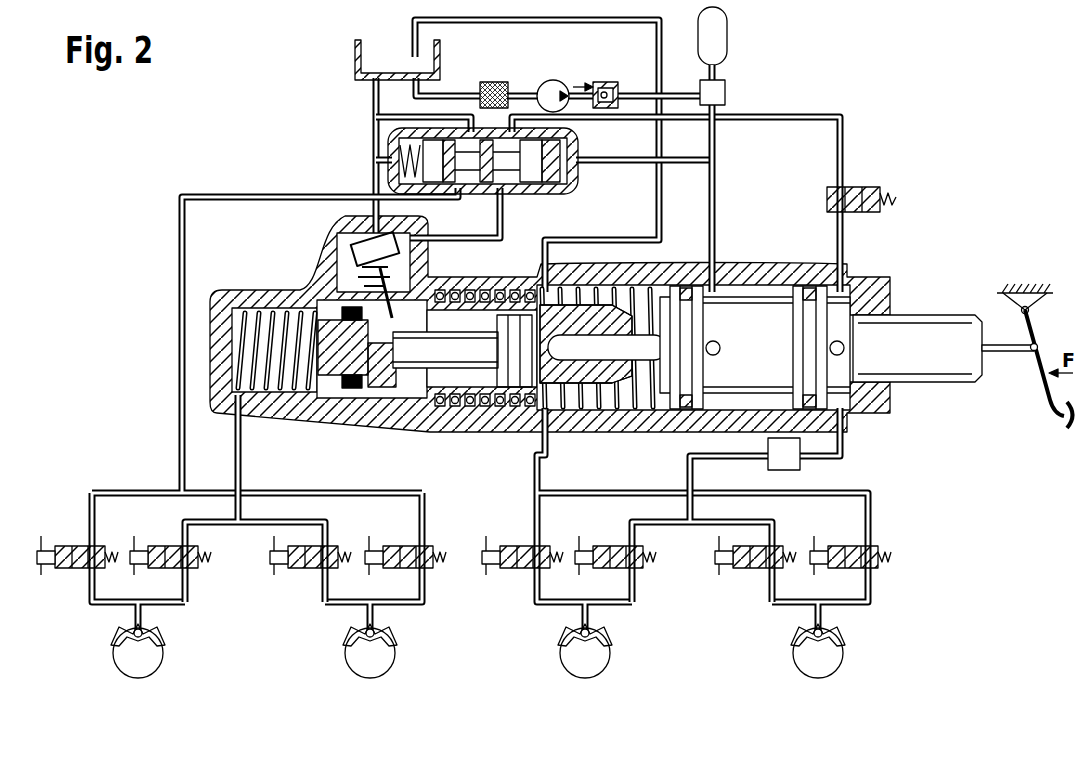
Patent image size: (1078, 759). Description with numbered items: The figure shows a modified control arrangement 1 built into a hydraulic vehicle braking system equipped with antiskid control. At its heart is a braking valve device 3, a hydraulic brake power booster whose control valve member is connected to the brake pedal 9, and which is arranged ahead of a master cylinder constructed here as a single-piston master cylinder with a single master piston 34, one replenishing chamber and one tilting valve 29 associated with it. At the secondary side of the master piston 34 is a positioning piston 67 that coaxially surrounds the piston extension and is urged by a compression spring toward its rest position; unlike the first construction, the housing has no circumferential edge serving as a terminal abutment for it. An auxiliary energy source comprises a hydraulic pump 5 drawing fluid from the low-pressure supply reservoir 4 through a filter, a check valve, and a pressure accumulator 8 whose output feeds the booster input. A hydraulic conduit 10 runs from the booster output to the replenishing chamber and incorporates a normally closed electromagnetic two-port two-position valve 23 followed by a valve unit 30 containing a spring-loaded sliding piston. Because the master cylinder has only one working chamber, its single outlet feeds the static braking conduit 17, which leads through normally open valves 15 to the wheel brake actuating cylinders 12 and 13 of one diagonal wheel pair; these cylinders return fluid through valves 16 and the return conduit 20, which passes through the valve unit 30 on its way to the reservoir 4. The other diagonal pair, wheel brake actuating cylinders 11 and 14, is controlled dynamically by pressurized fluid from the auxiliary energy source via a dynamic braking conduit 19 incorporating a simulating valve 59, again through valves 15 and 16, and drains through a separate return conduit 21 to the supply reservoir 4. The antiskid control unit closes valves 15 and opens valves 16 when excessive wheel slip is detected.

The control arrangement 1 is at (212, 172).
The braking valve device 3 is at (688, 442).
The low-pressure hydraulic supply reservoir 4 is at (355, 58).
The hydraulic pump 5 is at (553, 80).
The pressure accumulator 8 is at (718, 40).
The brake pedal 9 is at (1053, 409).
The hydraulic conduit 10 is at (843, 141).
The wheel brake actuating cylinder 11 is at (605, 645).
The wheel brake actuating cylinder 12 is at (160, 634).
The wheel brake actuating cylinder 13 is at (392, 645).
The wheel brake actuating cylinder 14 is at (840, 644).
The two-port two-position valve 15 is at (190, 572).
The two-port two-position valve 16 is at (78, 572).
The braking conduit 17 is at (242, 458).
The dynamic braking conduit 19 is at (722, 458).
The return conduit 20 is at (180, 459).
The return conduit 21 is at (535, 478).
The two-port two-position valve 23 is at (857, 187).
The tilting valve 29 is at (340, 251).
The valve unit 30 is at (386, 136).
The master piston 34 is at (373, 386).
The simulating valve 59 is at (800, 462).
The positioning piston 67 is at (443, 404).